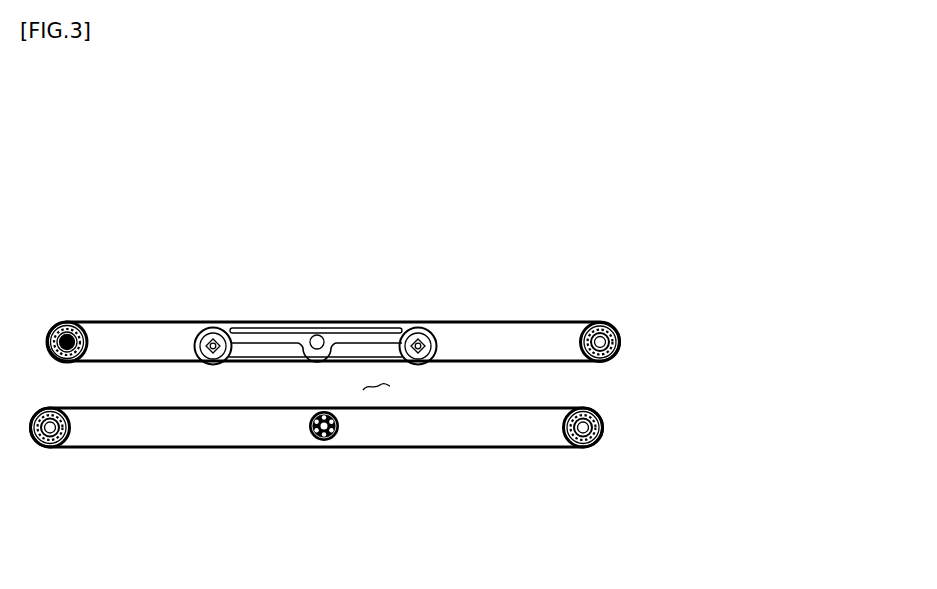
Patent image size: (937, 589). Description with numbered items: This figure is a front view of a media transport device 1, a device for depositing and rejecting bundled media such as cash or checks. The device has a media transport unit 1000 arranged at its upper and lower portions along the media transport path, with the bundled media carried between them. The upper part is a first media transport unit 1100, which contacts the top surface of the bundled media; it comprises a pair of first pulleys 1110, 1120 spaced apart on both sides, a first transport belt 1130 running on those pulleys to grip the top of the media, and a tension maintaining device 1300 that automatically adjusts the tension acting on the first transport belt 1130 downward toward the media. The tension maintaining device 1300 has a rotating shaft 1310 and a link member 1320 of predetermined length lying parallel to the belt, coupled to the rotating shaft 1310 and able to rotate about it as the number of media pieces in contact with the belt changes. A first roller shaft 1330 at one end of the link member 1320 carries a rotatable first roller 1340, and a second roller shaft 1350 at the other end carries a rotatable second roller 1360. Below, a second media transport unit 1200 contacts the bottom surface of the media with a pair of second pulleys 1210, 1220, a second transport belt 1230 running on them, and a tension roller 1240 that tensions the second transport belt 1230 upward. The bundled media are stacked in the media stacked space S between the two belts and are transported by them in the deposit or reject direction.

The media transport device 1 is at (171, 114).
The media transport unit 1000 is at (381, 383).
The first media transport unit 1100 is at (518, 300).
The first pulley 1110 is at (620, 341).
The first pulley 1120 is at (68, 322).
The first transport belt 1130 is at (470, 322).
The second media transport unit 1200 is at (521, 479).
The second pulley 1210 is at (602, 423).
The second pulley 1220 is at (52, 448).
The second transport belt 1230 is at (221, 447).
The tension roller 1240 is at (325, 441).
The tension maintaining device 1300 is at (353, 316).
The rotating shaft 1310 is at (316, 335).
The link member 1320 is at (275, 328).
The first roller shaft 1330 is at (418, 328).
The first roller 1340 is at (437, 330).
The second roller shaft 1350 is at (215, 328).
The second roller 1360 is at (185, 330).
The media stacked space S is at (373, 390).